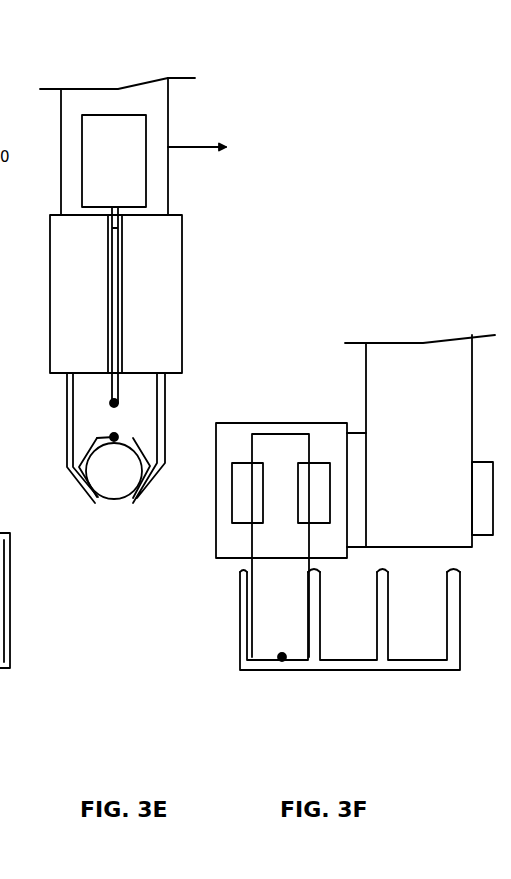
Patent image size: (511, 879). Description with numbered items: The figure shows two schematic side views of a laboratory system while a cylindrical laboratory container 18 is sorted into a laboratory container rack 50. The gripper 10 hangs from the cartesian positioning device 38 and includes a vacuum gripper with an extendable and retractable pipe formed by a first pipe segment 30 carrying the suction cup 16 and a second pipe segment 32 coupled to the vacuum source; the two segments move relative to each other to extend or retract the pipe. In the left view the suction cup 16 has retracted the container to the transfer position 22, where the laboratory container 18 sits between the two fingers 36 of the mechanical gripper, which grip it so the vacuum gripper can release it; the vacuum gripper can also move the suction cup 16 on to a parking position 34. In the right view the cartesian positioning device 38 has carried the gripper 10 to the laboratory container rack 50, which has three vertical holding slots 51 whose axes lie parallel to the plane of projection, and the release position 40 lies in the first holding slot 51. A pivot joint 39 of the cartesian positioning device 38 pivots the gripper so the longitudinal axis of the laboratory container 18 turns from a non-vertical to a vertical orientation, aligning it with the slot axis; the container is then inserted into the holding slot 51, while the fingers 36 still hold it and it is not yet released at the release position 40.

In FIG. 3E, the gripper 10 is at (200, 228).
In FIG. 3F, the gripper 10 is at (320, 408).
In FIG. 3E, the suction cup 16 is at (118, 403).
In FIG. 3E, the laboratory container 18 is at (103, 488).
In FIG. 3F, the laboratory container 18 is at (263, 592).
In FIG. 3E, the transfer position 22 is at (110, 435).
In FIG. 3E, the first pipe segment 30 is at (110, 353).
In FIG. 3E, the second pipe segment 32 is at (107, 282).
In FIG. 3E, the parking position 34 is at (110, 403).
In FIG. 3E, the fingers 36 is at (72, 463).
In FIG. 3F, the fingers 36 is at (318, 490).
In FIG. 3E, the cartesian positioning device 38 is at (78, 97).
In FIG. 3F, the cartesian positioning device 38 is at (398, 355).
In FIG. 3F, the pivot joint 39 is at (487, 500).
In FIG. 3F, the release position 40 is at (282, 657).
In FIG. 3F, the laboratory container rack 50 is at (242, 648).
In FIG. 3F, the holding slots 51 is at (417, 630).